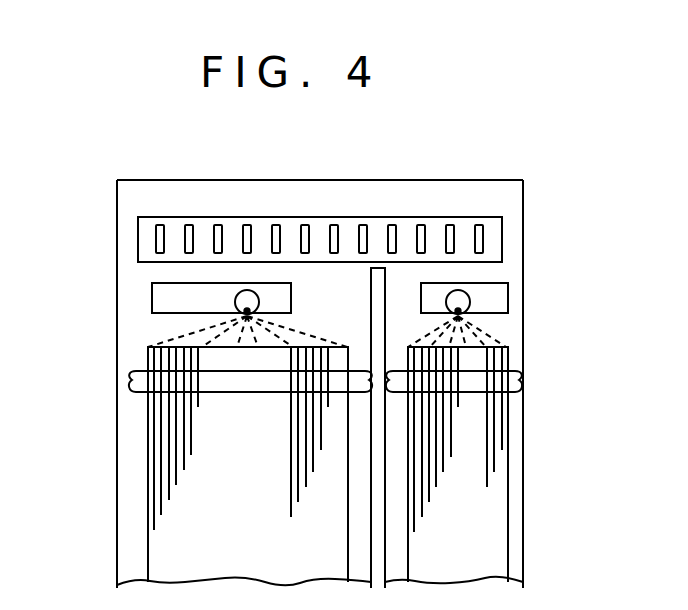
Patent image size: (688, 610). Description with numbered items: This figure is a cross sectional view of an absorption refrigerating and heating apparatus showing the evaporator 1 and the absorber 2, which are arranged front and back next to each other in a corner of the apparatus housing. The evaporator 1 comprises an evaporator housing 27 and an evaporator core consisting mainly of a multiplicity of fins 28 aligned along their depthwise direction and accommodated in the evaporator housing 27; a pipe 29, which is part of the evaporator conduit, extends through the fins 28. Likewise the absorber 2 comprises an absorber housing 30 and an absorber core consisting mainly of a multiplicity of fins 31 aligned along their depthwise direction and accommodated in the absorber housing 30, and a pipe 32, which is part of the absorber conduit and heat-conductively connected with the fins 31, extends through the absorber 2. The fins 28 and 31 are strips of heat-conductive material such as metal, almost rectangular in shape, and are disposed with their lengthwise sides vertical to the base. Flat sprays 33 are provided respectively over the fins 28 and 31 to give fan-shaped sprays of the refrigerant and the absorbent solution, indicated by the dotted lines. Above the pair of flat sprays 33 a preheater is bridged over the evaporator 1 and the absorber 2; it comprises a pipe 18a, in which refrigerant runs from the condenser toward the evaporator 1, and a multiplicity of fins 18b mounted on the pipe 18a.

The evaporator 1 is at (531, 553).
The absorber 2 is at (112, 510).
The pipe 18a is at (502, 236).
The fins 18b is at (455, 233).
The evaporator housing 27 is at (523, 462).
The fins 28 is at (492, 514).
The pipe 29 is at (518, 368).
The absorber housing 30 is at (117, 478).
The fins 31 is at (175, 539).
The pipe 32 is at (135, 392).
The flat sprays 33 is at (165, 300).